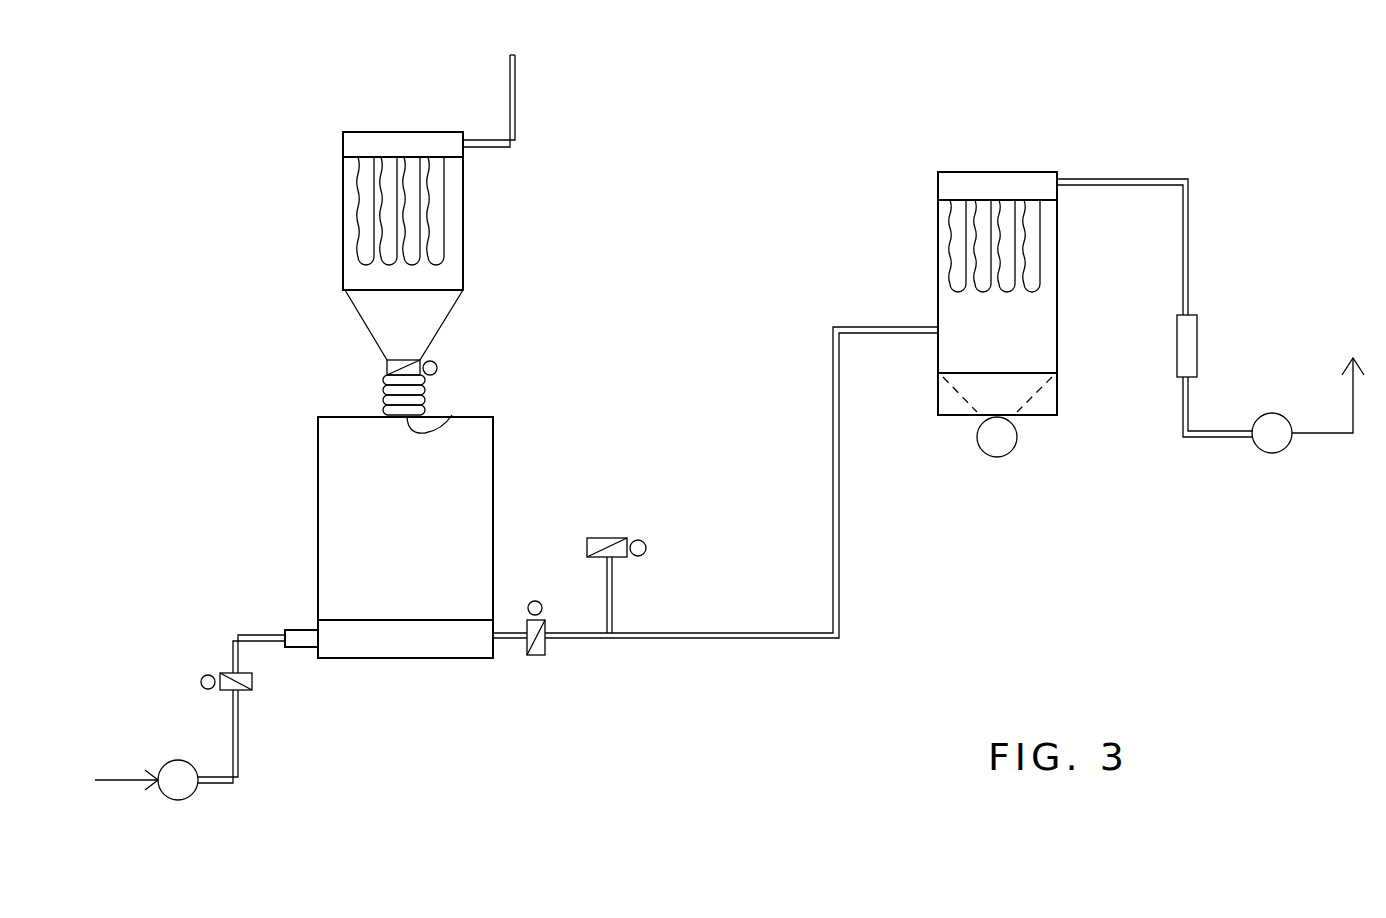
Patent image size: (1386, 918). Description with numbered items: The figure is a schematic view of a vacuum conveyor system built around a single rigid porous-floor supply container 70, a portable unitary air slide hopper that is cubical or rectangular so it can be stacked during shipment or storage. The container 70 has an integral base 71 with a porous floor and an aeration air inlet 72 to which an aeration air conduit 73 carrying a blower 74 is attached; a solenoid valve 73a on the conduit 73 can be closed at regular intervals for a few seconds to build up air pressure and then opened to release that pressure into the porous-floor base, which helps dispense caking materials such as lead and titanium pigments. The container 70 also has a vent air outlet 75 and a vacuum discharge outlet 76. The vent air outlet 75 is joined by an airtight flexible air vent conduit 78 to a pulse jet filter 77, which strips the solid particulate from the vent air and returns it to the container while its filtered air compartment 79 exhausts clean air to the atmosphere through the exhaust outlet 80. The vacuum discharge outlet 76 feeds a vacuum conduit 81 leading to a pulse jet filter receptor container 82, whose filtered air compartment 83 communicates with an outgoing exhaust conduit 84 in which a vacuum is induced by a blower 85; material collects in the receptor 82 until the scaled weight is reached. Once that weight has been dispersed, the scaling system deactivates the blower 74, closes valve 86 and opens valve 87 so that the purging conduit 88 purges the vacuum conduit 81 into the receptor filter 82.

The supply container 70 is at (422, 545).
The integral base 71 is at (400, 647).
The aeration air inlet 72 is at (296, 630).
The aeration air conduit 73 is at (238, 635).
The solenoid valve 73a is at (225, 673).
The blower 74 is at (178, 760).
The vent air outlet 75 is at (452, 415).
The vacuum discharge outlet 76 is at (497, 638).
The pulse jet filter 77 is at (503, 258).
The flexible air vent conduit 78 is at (382, 395).
The filtered air compartment 79 is at (417, 132).
The exhaust outlet 80 is at (517, 90).
The vacuum conduit 81 is at (697, 638).
The pulse jet filter receptor container 82 is at (899, 271).
The filtered air compartment 83 is at (990, 172).
The outgoing exhaust conduit 84 is at (1140, 178).
The blower 85 is at (1270, 453).
The valve 86 is at (548, 648).
The valve 87 is at (607, 538).
The purging conduit 88 is at (612, 600).